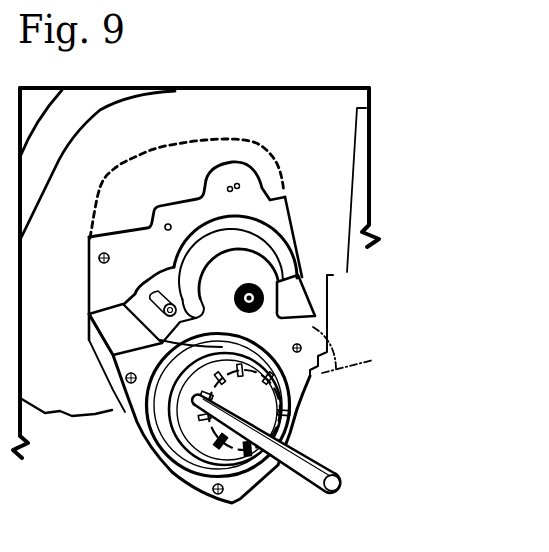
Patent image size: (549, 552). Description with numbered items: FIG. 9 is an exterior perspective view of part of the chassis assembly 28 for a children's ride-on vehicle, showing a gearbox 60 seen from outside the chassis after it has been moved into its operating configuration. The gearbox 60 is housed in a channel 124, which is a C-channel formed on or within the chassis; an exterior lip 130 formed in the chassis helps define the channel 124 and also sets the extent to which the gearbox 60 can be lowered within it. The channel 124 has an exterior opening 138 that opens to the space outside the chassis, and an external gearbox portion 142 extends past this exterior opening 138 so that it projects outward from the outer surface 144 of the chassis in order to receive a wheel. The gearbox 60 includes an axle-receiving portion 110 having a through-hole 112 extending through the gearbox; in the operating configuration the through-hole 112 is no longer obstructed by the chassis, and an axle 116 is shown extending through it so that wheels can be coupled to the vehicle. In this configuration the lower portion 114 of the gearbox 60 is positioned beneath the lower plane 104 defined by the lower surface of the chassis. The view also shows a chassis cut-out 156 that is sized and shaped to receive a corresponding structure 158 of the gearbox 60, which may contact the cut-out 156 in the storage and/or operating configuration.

The chassis assembly 28 is at (297, 79).
The outer surface 144 is at (240, 121).
The exterior lip 130 is at (88, 402).
The channel 124 is at (97, 297).
The chassis cut-out 156 is at (242, 168).
The corresponding structure 158 is at (240, 258).
The exterior opening 138 is at (284, 233).
The gearbox 60 is at (310, 322).
The external gearbox portion 142 is at (298, 391).
The lower portion 114 is at (193, 489).
The lower plane 104 is at (326, 330).
The through-hole 112 is at (232, 440).
The axle 116 is at (335, 490).
The axle-receiving portion 110 is at (297, 436).